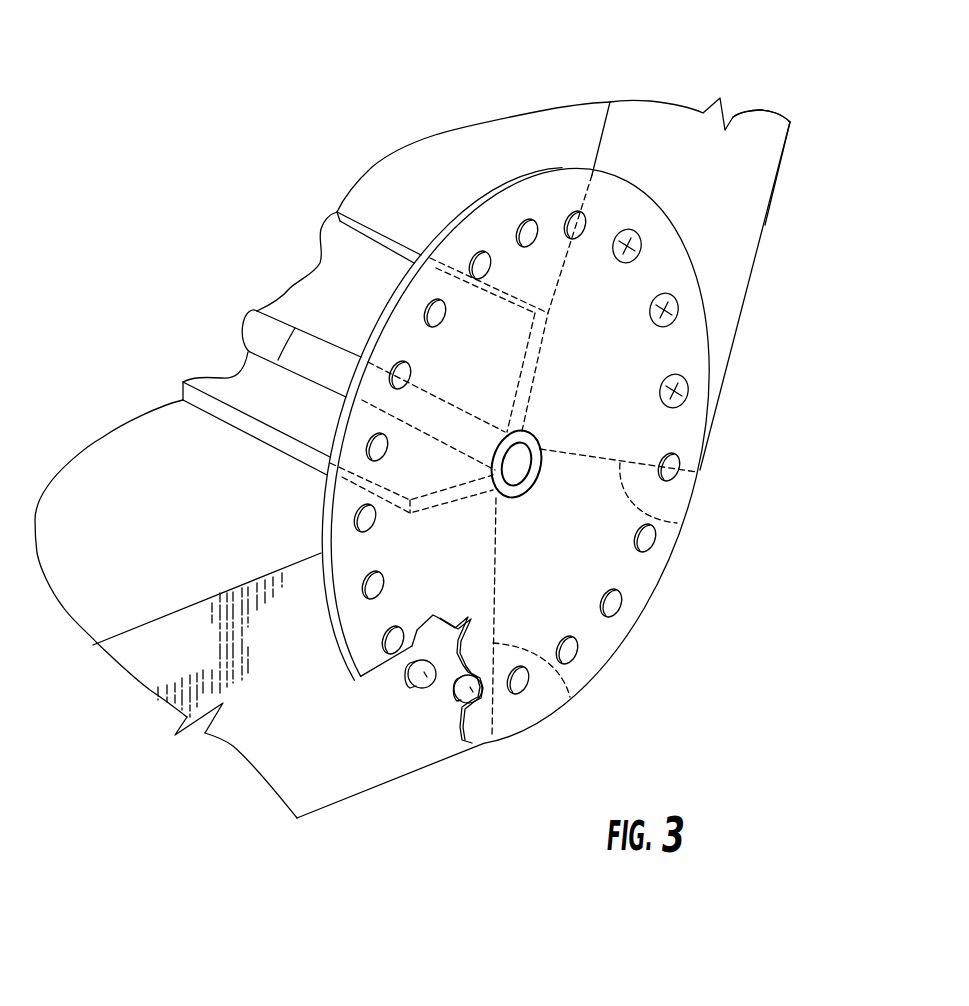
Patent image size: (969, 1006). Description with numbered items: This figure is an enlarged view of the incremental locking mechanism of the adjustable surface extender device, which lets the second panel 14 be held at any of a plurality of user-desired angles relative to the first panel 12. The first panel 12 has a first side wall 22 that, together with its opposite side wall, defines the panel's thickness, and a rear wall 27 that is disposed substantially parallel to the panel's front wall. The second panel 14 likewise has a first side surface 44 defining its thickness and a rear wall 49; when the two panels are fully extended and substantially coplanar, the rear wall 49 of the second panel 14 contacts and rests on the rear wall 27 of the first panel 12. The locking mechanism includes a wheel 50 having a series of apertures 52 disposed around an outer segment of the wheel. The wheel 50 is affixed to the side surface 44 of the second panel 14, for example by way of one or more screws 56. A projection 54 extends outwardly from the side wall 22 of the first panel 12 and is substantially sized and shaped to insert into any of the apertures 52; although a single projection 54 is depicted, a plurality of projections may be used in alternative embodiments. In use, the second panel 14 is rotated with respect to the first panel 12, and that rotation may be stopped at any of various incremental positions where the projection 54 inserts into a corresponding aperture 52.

The first panel 12 is at (73, 432).
The second panel 14 is at (645, 100).
The first side wall 22 is at (340, 761).
The rear wall 27 is at (577, 698).
The first side surface 44 is at (727, 213).
The rear wall 49 is at (677, 523).
The wheel 50 is at (587, 552).
The apertures 52 is at (617, 602).
The projection 54 is at (423, 690).
The screws 56 is at (684, 394).